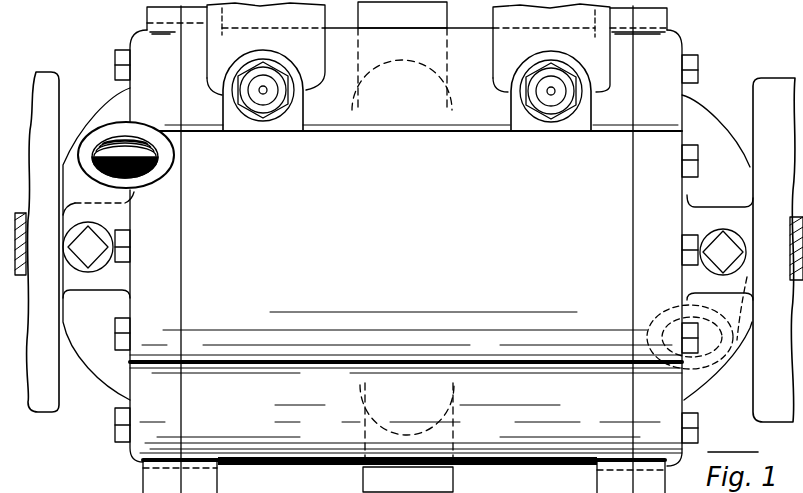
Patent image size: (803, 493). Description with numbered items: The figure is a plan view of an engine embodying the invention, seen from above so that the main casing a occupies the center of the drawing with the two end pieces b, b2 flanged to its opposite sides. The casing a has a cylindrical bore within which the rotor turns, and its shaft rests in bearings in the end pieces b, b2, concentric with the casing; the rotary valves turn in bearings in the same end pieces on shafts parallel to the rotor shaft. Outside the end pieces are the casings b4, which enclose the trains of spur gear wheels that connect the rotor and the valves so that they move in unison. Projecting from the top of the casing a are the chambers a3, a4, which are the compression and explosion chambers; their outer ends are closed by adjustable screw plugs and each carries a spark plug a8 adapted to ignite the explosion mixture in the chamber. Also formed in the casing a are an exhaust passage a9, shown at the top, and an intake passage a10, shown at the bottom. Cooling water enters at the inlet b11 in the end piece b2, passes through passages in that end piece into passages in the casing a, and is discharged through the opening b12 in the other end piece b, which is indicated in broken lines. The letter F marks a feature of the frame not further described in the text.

The casing a is at (406, 260).
The compression and explosion chamber a3 is at (580, 48).
The compression and explosion chamber a4 is at (236, 49).
The spark plug a8 is at (262, 95).
The exhaust passage a9 is at (402, 56).
The intake passage a10 is at (407, 437).
The end piece b is at (701, 247).
The end piece b2 is at (114, 244).
The gear casing b4 is at (776, 85).
The water inlet b11 is at (108, 148).
The water discharge opening b12 is at (707, 372).
The frame F is at (414, 249).